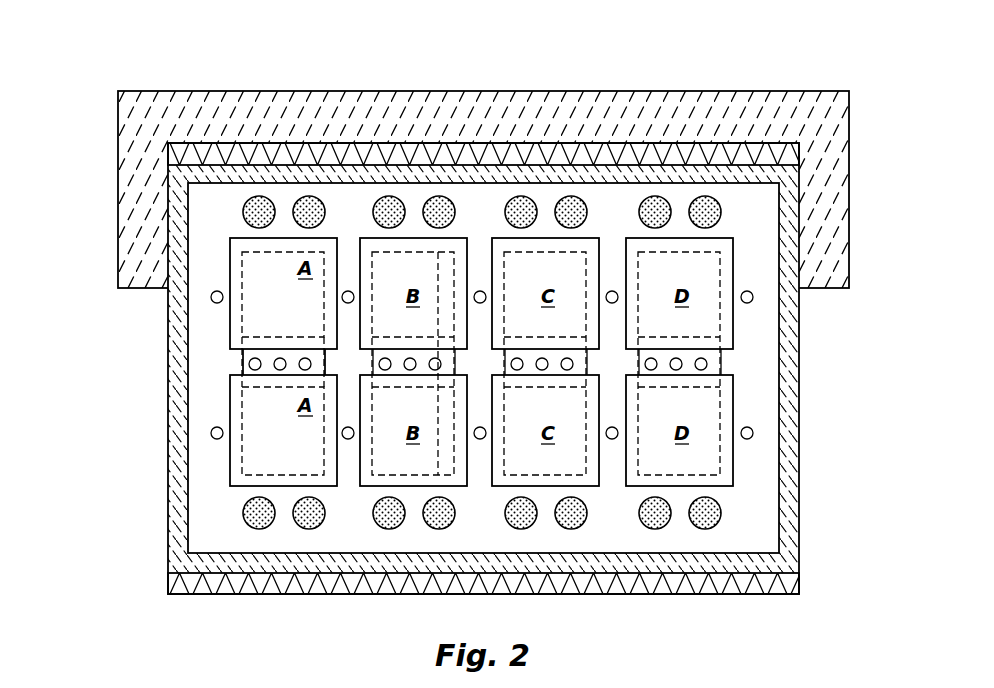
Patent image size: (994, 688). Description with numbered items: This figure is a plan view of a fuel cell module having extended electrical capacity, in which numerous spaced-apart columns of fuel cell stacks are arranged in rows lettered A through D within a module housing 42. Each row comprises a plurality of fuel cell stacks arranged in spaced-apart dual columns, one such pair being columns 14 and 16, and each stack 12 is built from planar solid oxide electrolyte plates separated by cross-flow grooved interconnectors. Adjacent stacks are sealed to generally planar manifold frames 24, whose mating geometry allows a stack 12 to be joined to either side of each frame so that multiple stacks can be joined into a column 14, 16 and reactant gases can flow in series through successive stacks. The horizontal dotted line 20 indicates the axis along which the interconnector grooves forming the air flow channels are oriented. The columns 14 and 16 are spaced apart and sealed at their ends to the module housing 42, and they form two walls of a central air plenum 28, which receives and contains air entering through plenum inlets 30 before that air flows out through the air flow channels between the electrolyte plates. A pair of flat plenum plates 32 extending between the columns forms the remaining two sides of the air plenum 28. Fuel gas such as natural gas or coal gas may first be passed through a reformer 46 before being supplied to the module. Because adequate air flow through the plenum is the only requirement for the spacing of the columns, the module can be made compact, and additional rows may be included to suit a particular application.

The stack 12 is at (242, 458).
The column 14 is at (271, 308).
The column 16 is at (271, 445).
The air flow channel axis 20 is at (438, 272).
The manifold frame 24 is at (230, 265).
The central air plenum 28 is at (399, 368).
The plenum inlet 30 is at (243, 377).
The plenum plate 32 is at (248, 365).
The module housing 42 is at (673, 91).
The reformer 46 is at (248, 526).